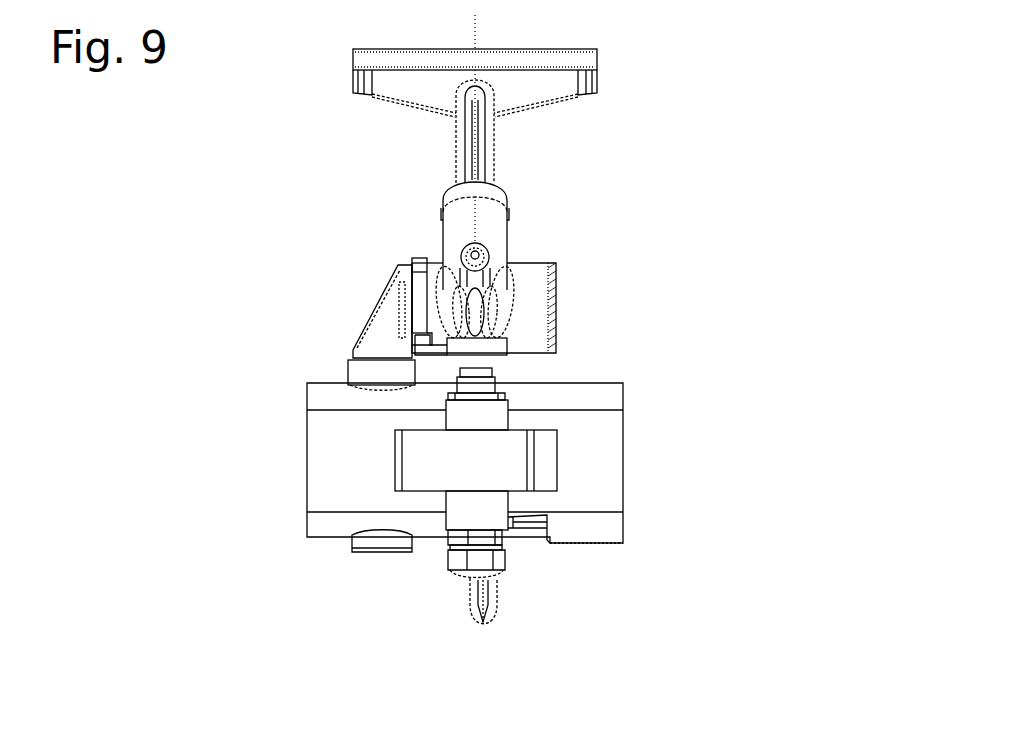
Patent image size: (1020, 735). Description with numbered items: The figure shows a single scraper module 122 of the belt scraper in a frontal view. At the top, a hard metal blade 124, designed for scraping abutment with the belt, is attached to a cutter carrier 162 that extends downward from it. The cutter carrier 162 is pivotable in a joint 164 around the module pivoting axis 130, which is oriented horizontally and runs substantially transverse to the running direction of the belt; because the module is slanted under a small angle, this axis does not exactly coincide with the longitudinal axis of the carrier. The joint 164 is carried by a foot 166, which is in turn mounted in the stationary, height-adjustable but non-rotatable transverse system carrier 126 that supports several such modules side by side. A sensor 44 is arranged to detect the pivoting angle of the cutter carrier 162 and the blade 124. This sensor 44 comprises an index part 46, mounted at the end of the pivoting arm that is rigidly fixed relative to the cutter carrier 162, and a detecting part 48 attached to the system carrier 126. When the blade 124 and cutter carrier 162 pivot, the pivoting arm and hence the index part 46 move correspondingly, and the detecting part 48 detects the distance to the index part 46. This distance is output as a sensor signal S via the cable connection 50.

The scraper module 122 is at (280, 195).
The hard metal blade 124 is at (578, 53).
The cutter carrier 162 is at (483, 163).
The joint 164 is at (543, 272).
The module pivoting axis 130 is at (354, 308).
The foot 166 is at (362, 373).
The system carrier 126 is at (313, 400).
The index part 46 is at (482, 352).
The detecting part 48 is at (487, 381).
The sensor 44 is at (580, 439).
The cable connection 50 is at (470, 607).
The sensor signal S is at (526, 621).